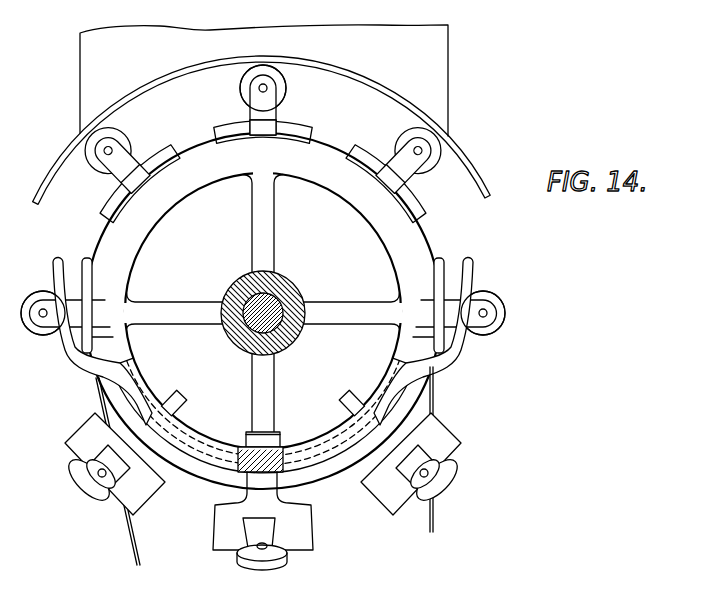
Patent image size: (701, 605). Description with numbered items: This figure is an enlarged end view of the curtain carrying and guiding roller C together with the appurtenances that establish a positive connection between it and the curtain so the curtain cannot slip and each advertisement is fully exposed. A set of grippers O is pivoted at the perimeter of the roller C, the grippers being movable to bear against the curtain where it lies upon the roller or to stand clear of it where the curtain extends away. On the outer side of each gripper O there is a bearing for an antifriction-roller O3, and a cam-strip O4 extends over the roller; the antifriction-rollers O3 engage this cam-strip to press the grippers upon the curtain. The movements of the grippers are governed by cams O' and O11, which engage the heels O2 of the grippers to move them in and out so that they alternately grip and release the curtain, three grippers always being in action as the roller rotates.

The gripper O is at (258, 328).
The cam O' is at (263, 311).
The heel O2 is at (260, 130).
The antifriction-roller O3 is at (244, 77).
The cam-strip O4 is at (99, 118).
The cam O11 is at (200, 437).
The roller C is at (321, 160).